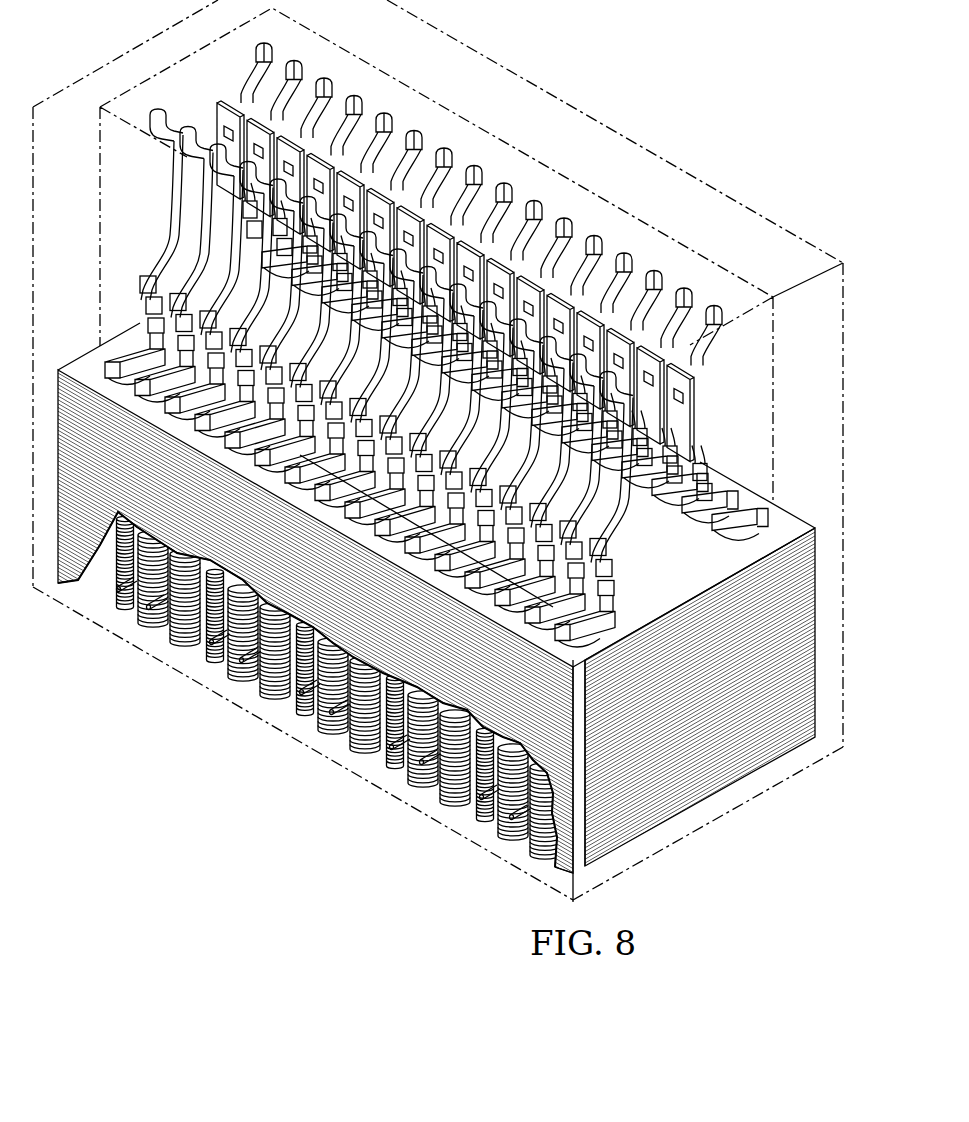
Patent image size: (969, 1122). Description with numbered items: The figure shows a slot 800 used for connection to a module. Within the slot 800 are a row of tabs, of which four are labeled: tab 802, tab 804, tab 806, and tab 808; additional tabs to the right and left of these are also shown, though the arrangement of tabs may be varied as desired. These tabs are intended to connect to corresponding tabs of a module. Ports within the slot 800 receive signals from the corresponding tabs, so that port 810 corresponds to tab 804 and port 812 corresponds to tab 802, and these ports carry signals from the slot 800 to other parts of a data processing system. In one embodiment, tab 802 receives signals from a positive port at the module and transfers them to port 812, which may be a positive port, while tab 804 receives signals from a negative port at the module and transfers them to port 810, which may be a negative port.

The slot 800 is at (656, 74).
The tab 802 is at (312, 502).
The tab 804 is at (336, 530).
The tab 806 is at (478, 166).
The tab 808 is at (513, 192).
The port 810 is at (338, 716).
The port 812 is at (300, 692).